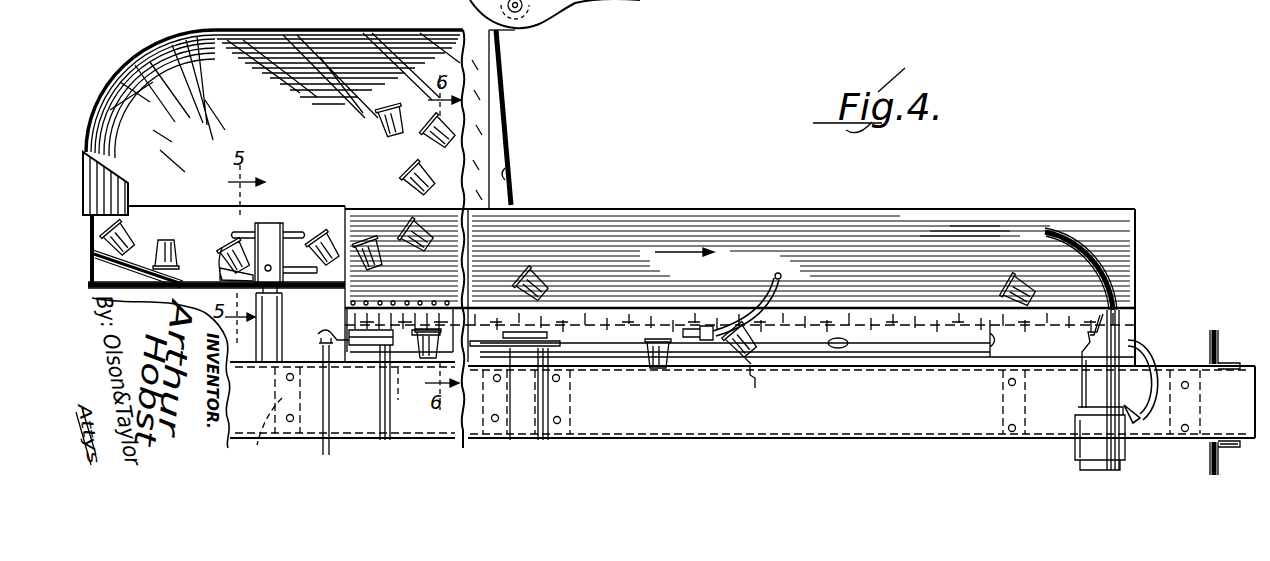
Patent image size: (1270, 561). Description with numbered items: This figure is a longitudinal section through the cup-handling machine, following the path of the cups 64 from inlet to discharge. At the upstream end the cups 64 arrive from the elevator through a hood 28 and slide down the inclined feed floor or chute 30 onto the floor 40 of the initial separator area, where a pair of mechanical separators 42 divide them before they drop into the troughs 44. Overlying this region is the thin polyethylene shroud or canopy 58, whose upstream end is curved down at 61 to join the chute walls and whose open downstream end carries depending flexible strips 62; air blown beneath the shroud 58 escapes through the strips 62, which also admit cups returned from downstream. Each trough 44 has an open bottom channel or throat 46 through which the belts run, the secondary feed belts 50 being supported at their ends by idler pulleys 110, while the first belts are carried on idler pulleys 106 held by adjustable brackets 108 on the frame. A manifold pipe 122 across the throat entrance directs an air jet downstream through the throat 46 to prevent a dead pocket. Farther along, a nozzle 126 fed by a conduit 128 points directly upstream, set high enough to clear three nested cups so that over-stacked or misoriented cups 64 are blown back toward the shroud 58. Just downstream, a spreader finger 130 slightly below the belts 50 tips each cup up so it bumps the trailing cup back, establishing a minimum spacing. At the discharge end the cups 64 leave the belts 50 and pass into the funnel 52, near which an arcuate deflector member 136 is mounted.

The idler pulleys 110 is at (1083, 10).
The curved-down upstream end of shroud 61 is at (146, 55).
The shroud or canopy 58 is at (334, 22).
The flexible polyethylene strips 62 is at (506, 170).
The hood 28 is at (113, 167).
The inclined feed floor or chute 30 is at (205, 200).
The cups 64 is at (128, 229).
The mechanical separators 42 is at (303, 233).
The floor of the initial separator area 40 is at (329, 288).
The manifold pipe 122 is at (312, 329).
The open bottom channel or throat 46 is at (897, 348).
The blow-back nozzle 126 is at (694, 330).
The conduit or tube 128 is at (781, 274).
The spreader finger 130 is at (756, 368).
The second belts (secondary feed belts) 50 is at (838, 348).
The idler pulleys 106 is at (400, 385).
The adjustable brackets 108 is at (292, 465).
The troughs 44 is at (1097, 208).
The arcuate deflector member 136 is at (1095, 258).
The discharge mechanism or funnel 52 is at (1115, 327).